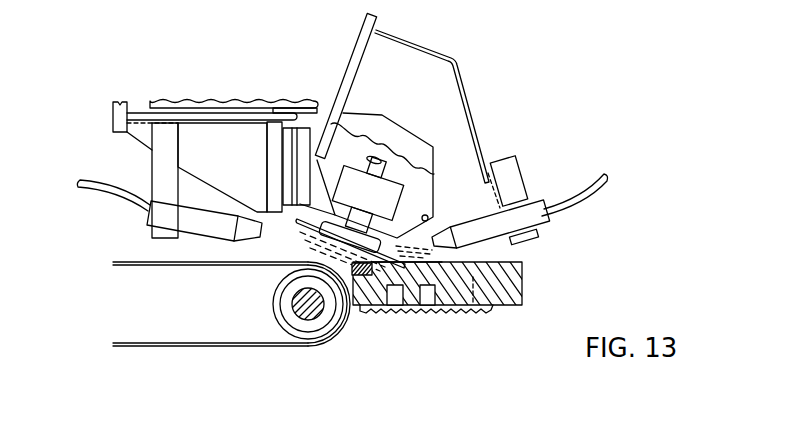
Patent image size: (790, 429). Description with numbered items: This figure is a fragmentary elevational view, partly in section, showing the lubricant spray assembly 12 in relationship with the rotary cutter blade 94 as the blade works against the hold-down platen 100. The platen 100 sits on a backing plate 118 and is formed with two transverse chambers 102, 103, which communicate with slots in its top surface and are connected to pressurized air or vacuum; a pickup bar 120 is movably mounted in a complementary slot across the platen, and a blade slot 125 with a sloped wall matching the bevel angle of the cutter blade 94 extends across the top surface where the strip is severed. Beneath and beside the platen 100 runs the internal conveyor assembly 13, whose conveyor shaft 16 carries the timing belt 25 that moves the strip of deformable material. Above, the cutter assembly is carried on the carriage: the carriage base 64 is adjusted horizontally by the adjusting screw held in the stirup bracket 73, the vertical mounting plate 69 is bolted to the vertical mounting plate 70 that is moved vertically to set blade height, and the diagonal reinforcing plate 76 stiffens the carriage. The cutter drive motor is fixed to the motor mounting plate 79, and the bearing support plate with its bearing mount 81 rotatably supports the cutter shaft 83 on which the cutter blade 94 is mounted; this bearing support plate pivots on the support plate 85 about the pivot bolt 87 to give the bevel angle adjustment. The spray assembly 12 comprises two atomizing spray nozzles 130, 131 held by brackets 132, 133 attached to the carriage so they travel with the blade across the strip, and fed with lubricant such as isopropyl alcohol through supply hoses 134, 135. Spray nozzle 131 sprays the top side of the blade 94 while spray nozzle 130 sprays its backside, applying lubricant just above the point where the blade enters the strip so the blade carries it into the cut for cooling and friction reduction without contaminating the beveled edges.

The lubricant spray assembly 12 is at (548, 138).
The internal conveyor assembly 13 is at (140, 355).
The conveyor shaft 16 is at (299, 312).
The timing belt 25 is at (145, 268).
The carriage base 64 is at (262, 101).
The vertical mounting plate 69 is at (272, 170).
The vertical mounting plate 70 is at (288, 140).
The stirup bracket 73 is at (112, 118).
The reinforcing plate 76 is at (200, 137).
The motor mounting plate 79 is at (352, 63).
The bearing mount 81 is at (373, 201).
The cutter shaft 83 is at (383, 168).
The support plate 85 is at (382, 128).
The pivot bolt 87 is at (428, 217).
The cutter blade 94 is at (297, 222).
The platen 100 is at (497, 297).
The chamber 102 is at (395, 306).
The chamber 103 is at (428, 306).
The backing plate 118 is at (483, 314).
The pickup bar 120 is at (362, 277).
The blade slot 125 is at (412, 268).
The spray nozzle 130 is at (200, 233).
The spray nozzle 131 is at (518, 222).
The bracket 132 is at (167, 168).
The bracket 133 is at (476, 110).
The supply hose 134 is at (118, 203).
The supply hose 135 is at (588, 198).